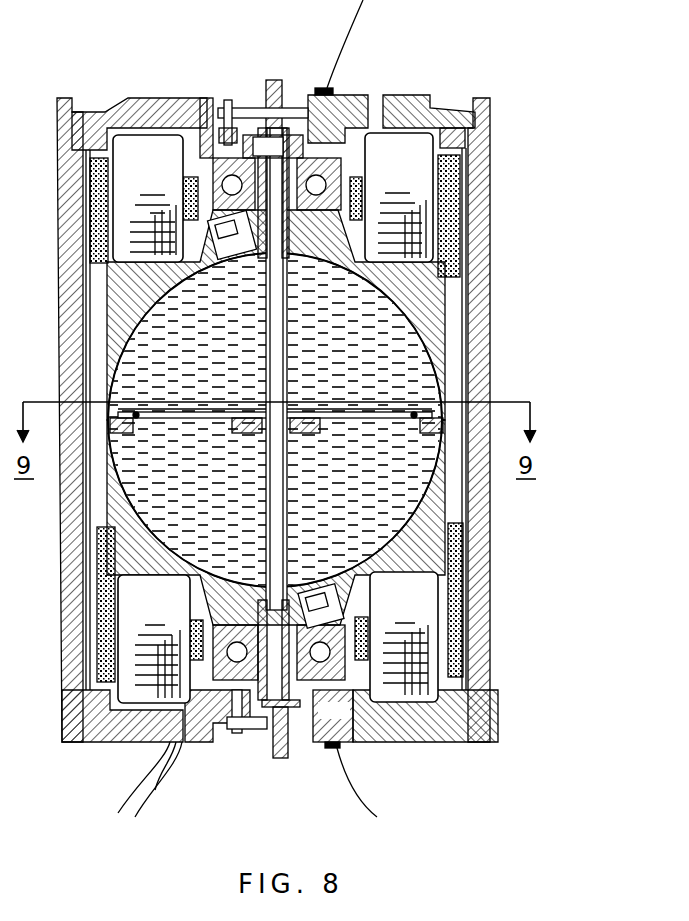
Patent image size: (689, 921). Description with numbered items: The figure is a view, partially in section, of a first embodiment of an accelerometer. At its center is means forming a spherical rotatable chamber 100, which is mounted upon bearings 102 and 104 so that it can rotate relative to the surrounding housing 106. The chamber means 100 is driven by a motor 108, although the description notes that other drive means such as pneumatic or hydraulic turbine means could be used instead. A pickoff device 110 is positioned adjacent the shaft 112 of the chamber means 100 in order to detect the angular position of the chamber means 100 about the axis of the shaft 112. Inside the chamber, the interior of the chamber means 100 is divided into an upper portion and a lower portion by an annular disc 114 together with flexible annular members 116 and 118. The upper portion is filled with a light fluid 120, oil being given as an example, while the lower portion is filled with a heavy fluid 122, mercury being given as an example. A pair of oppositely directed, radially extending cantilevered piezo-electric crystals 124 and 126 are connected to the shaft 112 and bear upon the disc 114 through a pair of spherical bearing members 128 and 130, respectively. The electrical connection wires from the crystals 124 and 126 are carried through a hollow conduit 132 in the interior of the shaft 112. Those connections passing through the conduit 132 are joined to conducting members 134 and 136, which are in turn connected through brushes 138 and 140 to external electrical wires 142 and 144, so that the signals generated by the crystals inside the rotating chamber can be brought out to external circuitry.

The spherical rotatable chamber means 100 is at (432, 301).
The bearing 102 is at (190, 157).
The bearing 104 is at (283, 663).
The housing 106 is at (75, 284).
The motor 108 is at (424, 609).
The pickoff device 110 is at (410, 162).
The shaft 112 is at (273, 146).
The annular disc 114 is at (403, 428).
The flexible annular member 116 is at (306, 435).
The flexible annular member 118 is at (123, 434).
The light fluid 120 is at (166, 289).
The heavy fluid 122 is at (276, 522).
The piezo-electric crystal 124 is at (200, 412).
The piezo-electric crystal 126 is at (319, 413).
The spherical bearing member 128 is at (137, 412).
The spherical bearing member 130 is at (425, 412).
The hollow conduit 132 is at (338, 222).
The conducting member 134 is at (281, 96).
The conducting member 136 is at (288, 748).
The brush 138 is at (260, 110).
The brush 140 is at (255, 726).
The external electrical wire 142 is at (356, 38).
The external electrical wire 144 is at (340, 748).